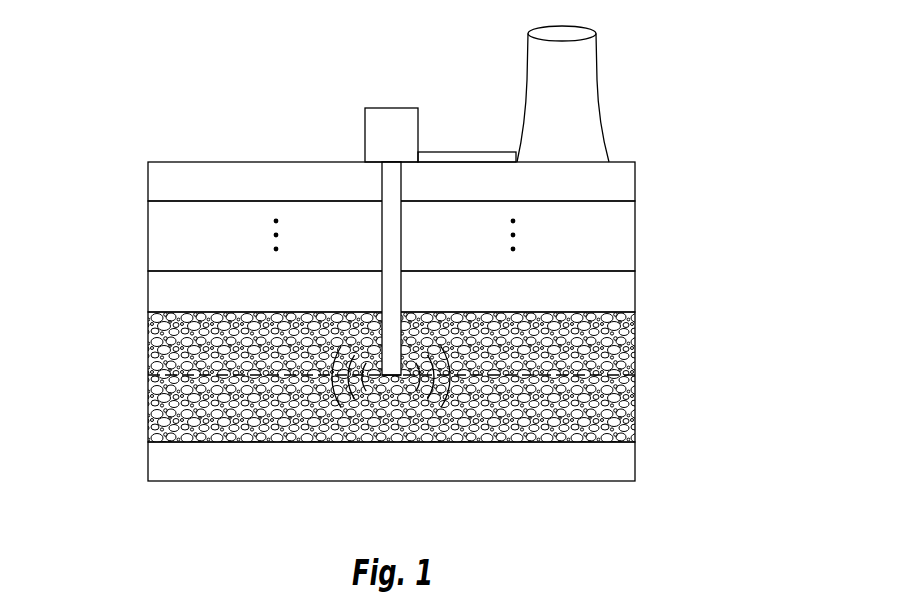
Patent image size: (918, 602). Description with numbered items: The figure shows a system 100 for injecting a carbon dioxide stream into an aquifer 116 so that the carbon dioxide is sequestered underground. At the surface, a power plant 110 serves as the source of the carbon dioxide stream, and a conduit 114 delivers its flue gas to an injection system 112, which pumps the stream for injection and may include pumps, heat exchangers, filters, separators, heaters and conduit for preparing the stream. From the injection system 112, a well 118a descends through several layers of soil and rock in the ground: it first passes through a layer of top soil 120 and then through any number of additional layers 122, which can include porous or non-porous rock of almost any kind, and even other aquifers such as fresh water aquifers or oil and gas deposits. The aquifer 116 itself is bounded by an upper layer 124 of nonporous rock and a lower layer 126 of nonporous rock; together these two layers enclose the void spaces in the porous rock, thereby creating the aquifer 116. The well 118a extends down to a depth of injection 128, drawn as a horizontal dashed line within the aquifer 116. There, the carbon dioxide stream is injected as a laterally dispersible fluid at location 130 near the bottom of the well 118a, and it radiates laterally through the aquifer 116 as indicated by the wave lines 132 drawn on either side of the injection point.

The system 100 is at (723, 62).
The power plant 110 is at (600, 70).
The injection system 112 is at (383, 108).
The conduit 114 is at (442, 152).
The aquifer 116 is at (147, 365).
The well 118a is at (380, 183).
The layer of top soil 120 is at (147, 182).
The additional layers 122 is at (147, 237).
The upper layer of nonporous rock 124 is at (147, 290).
The lower layer of nonporous rock 126 is at (147, 460).
The depth of injection 128 is at (636, 376).
The location 130 is at (387, 378).
The wave lines 132 is at (440, 393).